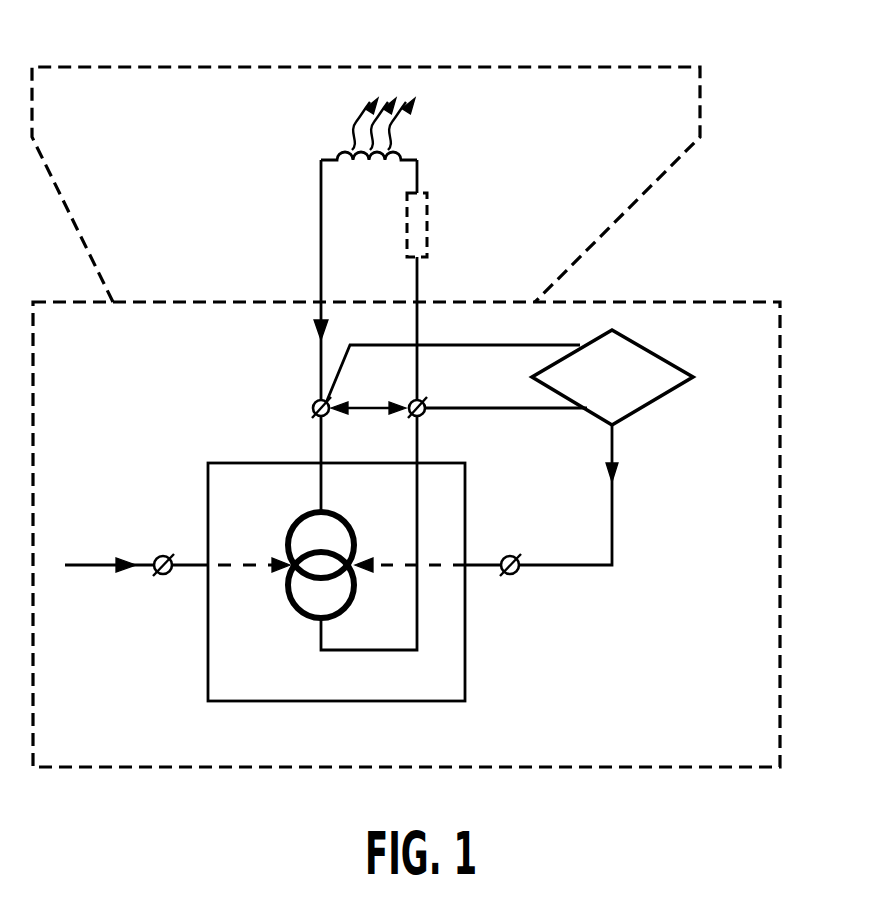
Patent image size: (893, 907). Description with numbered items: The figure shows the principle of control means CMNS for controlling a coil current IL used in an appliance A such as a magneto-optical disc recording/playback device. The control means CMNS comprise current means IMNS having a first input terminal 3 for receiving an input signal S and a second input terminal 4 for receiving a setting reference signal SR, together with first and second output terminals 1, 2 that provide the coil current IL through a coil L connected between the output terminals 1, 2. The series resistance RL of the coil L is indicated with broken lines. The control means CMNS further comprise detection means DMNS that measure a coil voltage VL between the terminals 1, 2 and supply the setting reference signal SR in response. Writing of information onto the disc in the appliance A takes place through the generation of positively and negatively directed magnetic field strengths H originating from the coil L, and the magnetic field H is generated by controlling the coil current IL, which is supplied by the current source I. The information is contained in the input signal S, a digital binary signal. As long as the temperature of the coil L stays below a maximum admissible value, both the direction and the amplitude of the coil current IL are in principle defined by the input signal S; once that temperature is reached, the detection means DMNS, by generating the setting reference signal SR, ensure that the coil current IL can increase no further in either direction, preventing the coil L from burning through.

The appliance A is at (702, 100).
The coil L is at (340, 154).
The magnetic field strengths H is at (405, 129).
The series resistance RL is at (435, 228).
The coil current IL is at (315, 330).
The coil voltage VL is at (368, 387).
The first output terminal 1 is at (313, 404).
The second output terminal 2 is at (425, 413).
The detection means DMNS is at (655, 390).
The setting reference signal SR is at (616, 470).
The control means CMNS is at (783, 538).
The current source I is at (322, 512).
The input signal S is at (93, 569).
The first input terminal 3 is at (165, 576).
The second input terminal 4 is at (512, 578).
The current means IMNS is at (258, 703).